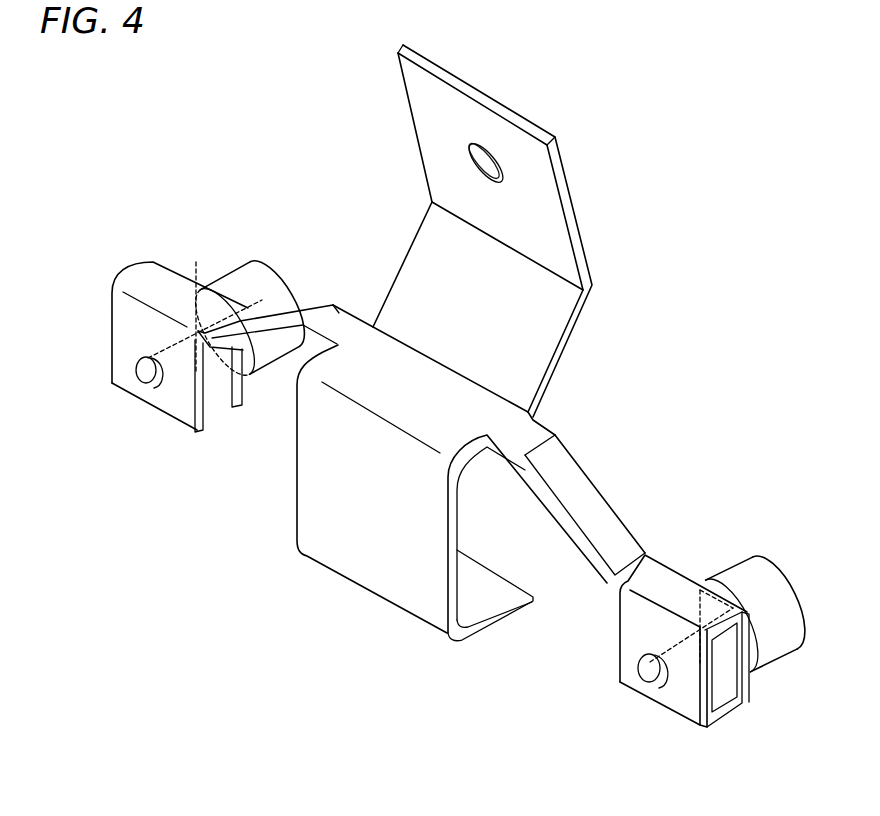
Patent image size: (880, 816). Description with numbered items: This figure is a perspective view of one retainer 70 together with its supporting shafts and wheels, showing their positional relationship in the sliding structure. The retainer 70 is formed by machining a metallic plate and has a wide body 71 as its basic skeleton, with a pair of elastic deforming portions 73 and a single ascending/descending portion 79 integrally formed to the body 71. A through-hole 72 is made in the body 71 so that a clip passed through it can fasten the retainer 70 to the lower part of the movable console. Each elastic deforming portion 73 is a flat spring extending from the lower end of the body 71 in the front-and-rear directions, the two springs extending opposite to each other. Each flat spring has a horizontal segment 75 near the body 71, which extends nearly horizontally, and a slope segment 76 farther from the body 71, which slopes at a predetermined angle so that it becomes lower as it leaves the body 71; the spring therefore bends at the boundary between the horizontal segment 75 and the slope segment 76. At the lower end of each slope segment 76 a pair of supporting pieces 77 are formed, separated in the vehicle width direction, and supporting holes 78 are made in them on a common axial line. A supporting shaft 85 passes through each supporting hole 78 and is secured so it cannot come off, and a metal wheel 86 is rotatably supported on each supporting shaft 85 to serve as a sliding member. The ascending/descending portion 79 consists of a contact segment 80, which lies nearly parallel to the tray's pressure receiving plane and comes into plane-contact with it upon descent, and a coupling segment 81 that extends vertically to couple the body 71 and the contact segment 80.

The retainer 70 is at (513, 231).
The body 71 is at (560, 242).
The through-hole 72 is at (481, 159).
The elastic deforming portion 73 is at (430, 395).
The horizontal segment 75 is at (467, 349).
The slope segment 76 is at (307, 303).
The supporting piece 77 is at (439, 500).
The supporting hole 78 is at (141, 356).
The ascending/descending portion 79 is at (452, 516).
The contact segment 80 is at (497, 621).
The coupling segment 81 is at (373, 615).
The supporting shaft 85 is at (138, 384).
The wheel 86 is at (255, 260).